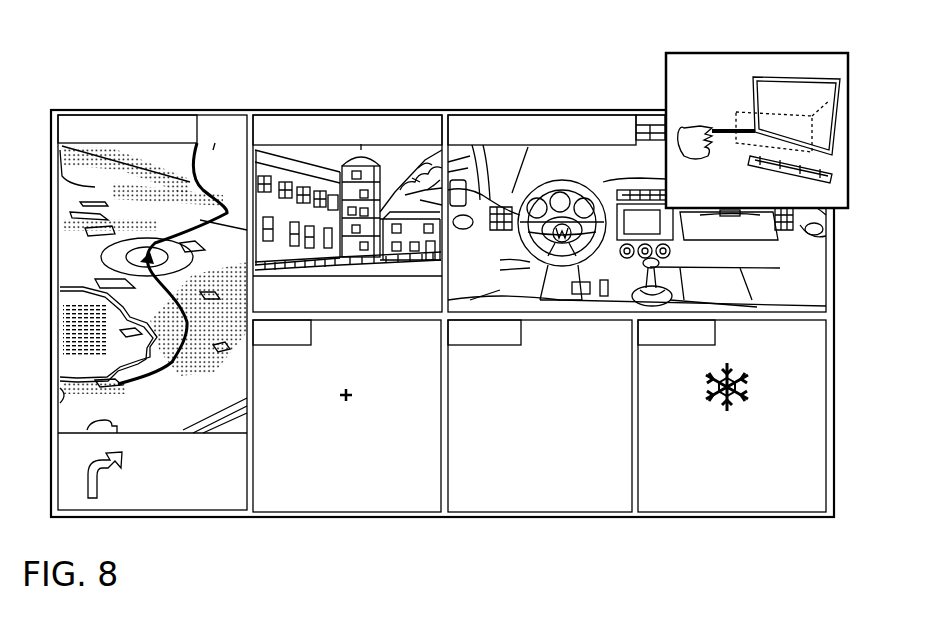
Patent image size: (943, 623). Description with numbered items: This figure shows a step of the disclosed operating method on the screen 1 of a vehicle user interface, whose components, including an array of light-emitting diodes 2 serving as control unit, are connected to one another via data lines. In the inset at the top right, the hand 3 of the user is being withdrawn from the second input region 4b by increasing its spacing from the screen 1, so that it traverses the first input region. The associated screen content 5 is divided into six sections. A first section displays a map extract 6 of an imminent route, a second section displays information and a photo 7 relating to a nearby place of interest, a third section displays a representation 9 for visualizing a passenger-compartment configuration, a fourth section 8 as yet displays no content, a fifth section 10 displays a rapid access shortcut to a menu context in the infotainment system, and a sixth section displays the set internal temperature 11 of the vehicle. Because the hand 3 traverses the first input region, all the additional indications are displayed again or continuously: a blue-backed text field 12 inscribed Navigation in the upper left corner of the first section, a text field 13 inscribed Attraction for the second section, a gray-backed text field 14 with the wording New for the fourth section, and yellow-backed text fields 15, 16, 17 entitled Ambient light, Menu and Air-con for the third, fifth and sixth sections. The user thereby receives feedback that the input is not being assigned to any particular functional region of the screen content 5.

The screen 1 is at (776, 70).
The array of light-emitting diodes 2 is at (764, 163).
The hand 3 is at (716, 142).
The second input region 4b is at (747, 113).
The screen content 5 is at (387, 110).
The map extract 6 is at (218, 133).
The photo 7 is at (432, 157).
The fourth section 8 is at (430, 503).
The representation 9 is at (649, 133).
The fifth section 10 is at (606, 503).
The set internal temperature 11 is at (802, 503).
The text field 12 is at (99, 117).
The text field 13 is at (293, 117).
The text field 14 is at (265, 345).
The text field 15 is at (575, 115).
The text field 16 is at (462, 345).
The text field 17 is at (670, 345).